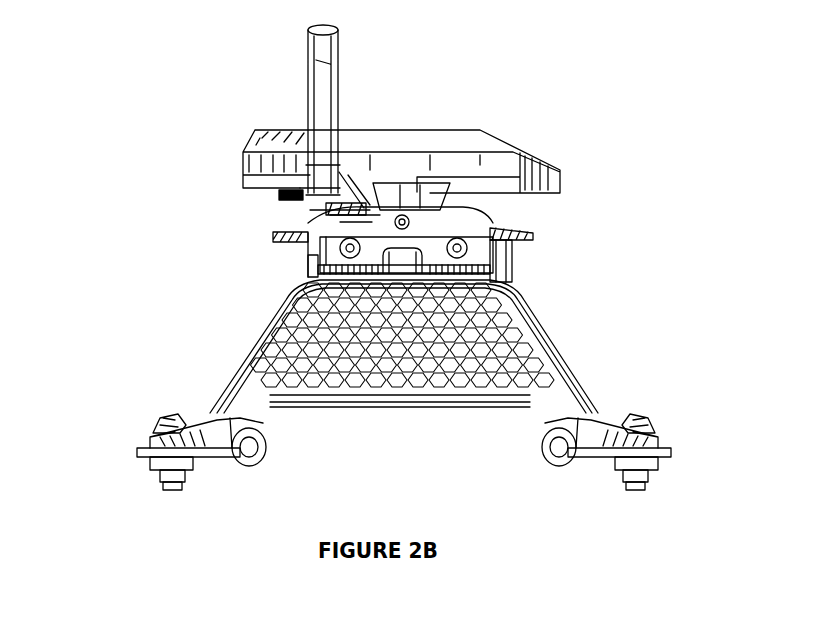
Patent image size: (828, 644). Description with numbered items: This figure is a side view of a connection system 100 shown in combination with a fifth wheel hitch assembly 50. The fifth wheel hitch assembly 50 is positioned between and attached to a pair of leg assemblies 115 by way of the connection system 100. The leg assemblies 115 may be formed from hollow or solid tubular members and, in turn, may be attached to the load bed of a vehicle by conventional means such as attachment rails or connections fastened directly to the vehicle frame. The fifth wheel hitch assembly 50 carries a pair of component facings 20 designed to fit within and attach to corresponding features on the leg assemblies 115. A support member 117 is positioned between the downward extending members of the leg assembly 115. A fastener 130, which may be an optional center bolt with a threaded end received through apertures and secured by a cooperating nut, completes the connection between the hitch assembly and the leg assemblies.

The fifth wheel hitch assembly 50 is at (247, 153).
The component facings 20 is at (373, 237).
The connection system 100 is at (540, 250).
The leg assemblies 115 is at (243, 395).
The support member 117 is at (442, 388).
The fastener 130 is at (400, 258).